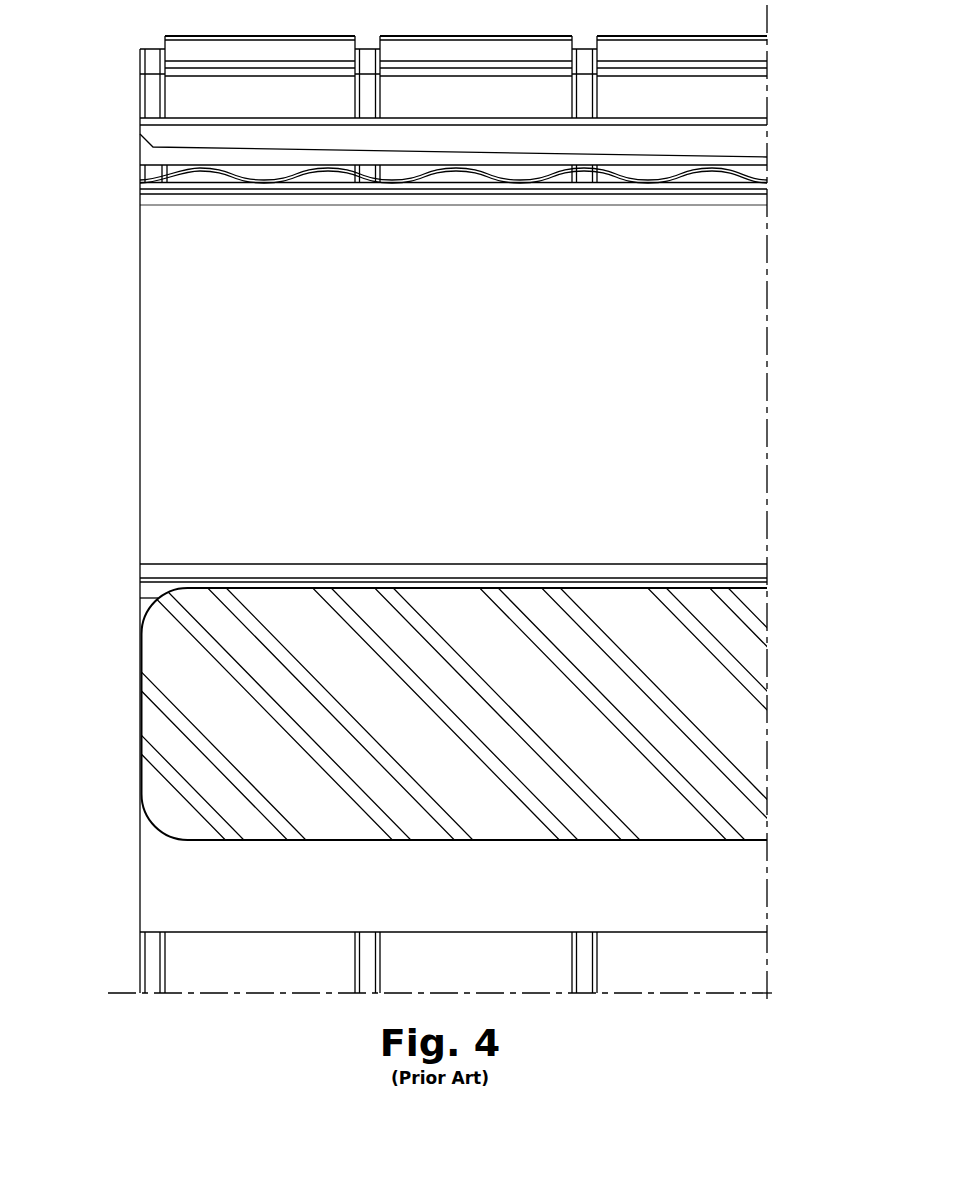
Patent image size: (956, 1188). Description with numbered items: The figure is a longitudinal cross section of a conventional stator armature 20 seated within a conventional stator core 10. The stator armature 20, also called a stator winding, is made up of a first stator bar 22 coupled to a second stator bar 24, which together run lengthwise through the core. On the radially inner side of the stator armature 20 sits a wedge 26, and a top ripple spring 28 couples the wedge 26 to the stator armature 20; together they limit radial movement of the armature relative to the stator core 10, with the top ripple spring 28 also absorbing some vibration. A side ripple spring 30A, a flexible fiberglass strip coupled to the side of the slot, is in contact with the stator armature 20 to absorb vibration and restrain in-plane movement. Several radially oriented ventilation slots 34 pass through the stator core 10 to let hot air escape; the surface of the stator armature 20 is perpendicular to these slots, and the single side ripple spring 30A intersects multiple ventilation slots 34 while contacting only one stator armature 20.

The stator core 10 is at (152, 62).
The stator armature 20 is at (116, 513).
The first stator bar 22 is at (238, 387).
The second stator bar 24 is at (177, 895).
The wedge 26 is at (700, 142).
The top ripple spring 28 is at (223, 176).
The side ripple spring 30A is at (234, 723).
The ventilation slot 34 is at (372, 95).